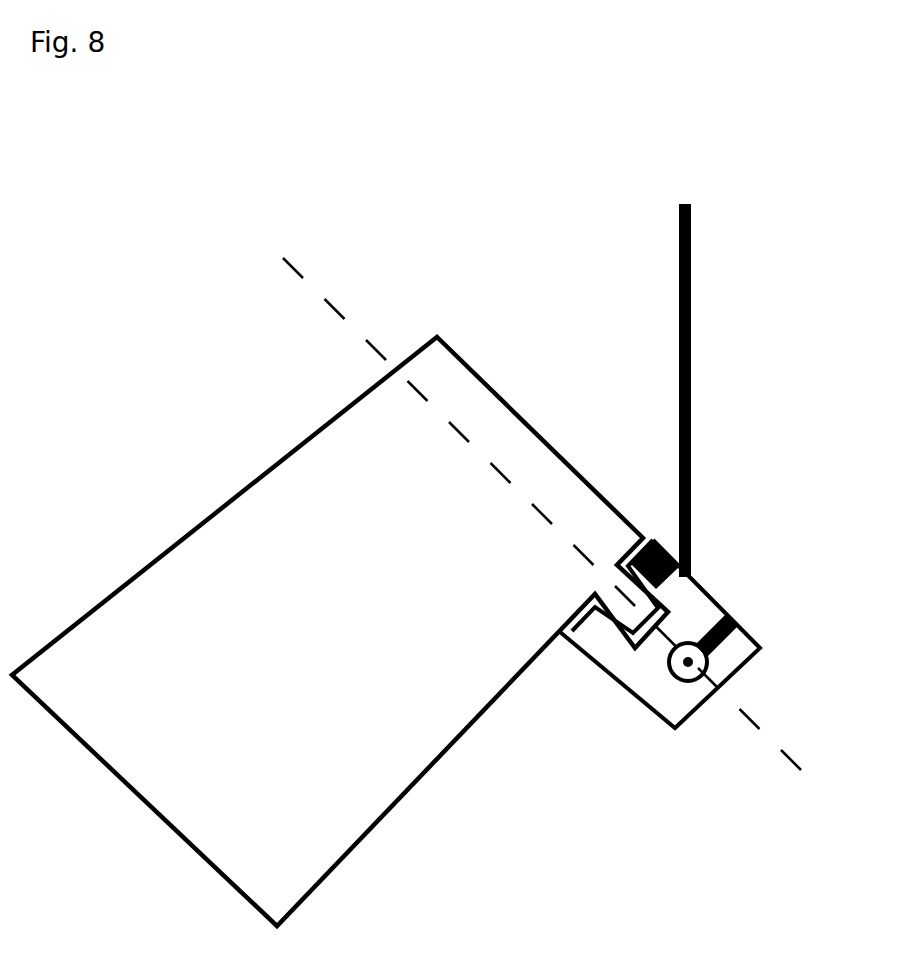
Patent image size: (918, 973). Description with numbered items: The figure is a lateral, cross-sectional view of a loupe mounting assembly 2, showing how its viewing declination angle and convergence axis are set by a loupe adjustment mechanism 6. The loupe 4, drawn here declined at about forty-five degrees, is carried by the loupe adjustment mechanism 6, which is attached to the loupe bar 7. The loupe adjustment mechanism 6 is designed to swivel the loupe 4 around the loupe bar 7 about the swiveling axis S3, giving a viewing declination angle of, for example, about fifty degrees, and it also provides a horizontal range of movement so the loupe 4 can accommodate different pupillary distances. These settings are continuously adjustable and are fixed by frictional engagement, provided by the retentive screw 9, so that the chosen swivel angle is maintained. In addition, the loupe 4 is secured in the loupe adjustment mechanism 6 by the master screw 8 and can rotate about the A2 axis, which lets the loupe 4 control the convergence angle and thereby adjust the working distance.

The loupe mounting assembly 2 is at (258, 390).
The loupe 4 is at (182, 538).
The loupe adjustment mechanism 6 is at (628, 686).
The loupe bar 7 is at (675, 266).
The master screw 8 is at (668, 546).
The retentive screw 9 is at (737, 605).
The swiveling axis S3 is at (683, 679).
The A2 axis A2 is at (520, 509).